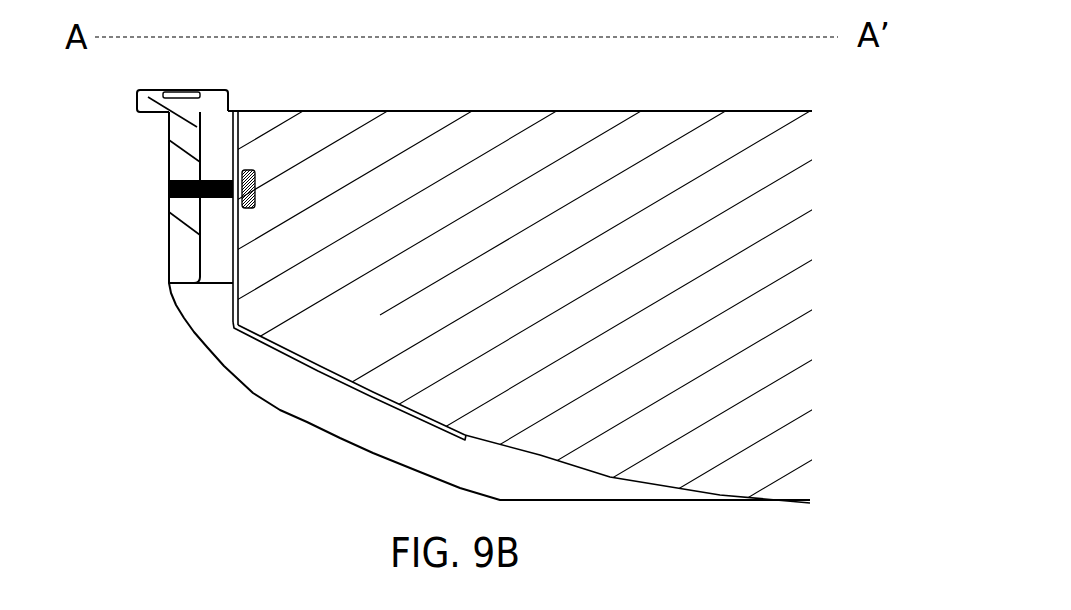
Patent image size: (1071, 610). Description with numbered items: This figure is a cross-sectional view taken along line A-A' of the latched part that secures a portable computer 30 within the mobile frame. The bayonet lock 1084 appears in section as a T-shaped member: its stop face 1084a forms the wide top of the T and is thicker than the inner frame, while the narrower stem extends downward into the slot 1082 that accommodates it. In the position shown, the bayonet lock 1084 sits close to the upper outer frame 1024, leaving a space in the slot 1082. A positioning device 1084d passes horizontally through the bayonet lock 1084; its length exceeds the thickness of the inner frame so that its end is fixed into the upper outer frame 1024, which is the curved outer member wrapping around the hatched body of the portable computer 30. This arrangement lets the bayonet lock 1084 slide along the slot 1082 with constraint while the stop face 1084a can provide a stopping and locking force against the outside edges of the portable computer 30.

The portable computer 30 is at (646, 111).
The upper outer frame 1024 is at (254, 403).
The slot 1082 is at (208, 170).
The bayonet lock 1084 is at (162, 247).
The stop face 1084a is at (131, 109).
The positioning device 1084d is at (163, 198).